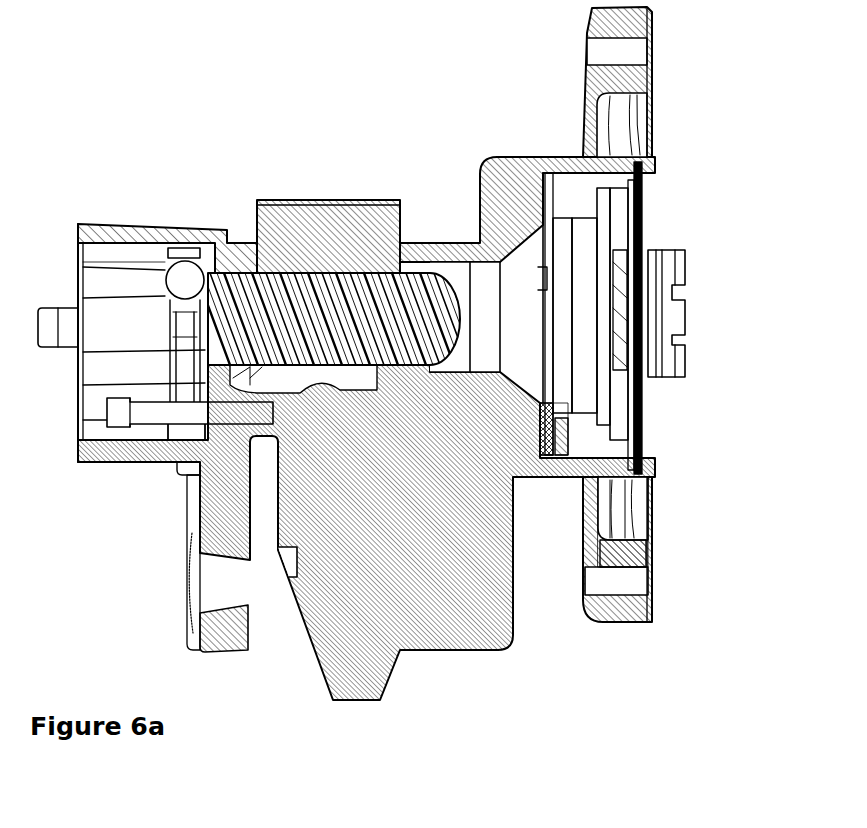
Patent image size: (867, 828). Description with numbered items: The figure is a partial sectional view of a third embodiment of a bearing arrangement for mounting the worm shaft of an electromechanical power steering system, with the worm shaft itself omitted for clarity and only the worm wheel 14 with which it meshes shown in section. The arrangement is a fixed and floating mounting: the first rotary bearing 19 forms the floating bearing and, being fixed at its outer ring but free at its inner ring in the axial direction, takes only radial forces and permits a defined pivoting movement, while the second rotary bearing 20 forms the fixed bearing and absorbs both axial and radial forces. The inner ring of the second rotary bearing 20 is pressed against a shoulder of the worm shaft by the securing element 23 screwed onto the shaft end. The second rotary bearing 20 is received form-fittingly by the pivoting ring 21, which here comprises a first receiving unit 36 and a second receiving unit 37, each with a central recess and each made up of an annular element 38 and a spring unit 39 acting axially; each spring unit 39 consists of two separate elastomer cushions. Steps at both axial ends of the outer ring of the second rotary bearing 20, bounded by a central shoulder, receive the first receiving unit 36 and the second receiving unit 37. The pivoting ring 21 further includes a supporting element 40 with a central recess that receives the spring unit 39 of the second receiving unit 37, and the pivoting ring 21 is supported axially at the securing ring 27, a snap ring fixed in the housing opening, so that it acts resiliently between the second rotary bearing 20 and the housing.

The first rotary bearing 19 is at (174, 207).
The worm wheel 14 is at (305, 277).
The second rotary bearing 20 is at (585, 238).
The pivoting ring 21 is at (578, 722).
The securing element 23 is at (677, 263).
The securing ring 27 is at (652, 177).
The first receiving unit 36 is at (521, 563).
The second receiving unit 37 is at (606, 713).
The annular element 38 is at (563, 440).
The spring unit 39 is at (546, 437).
The supporting element 40 is at (628, 207).